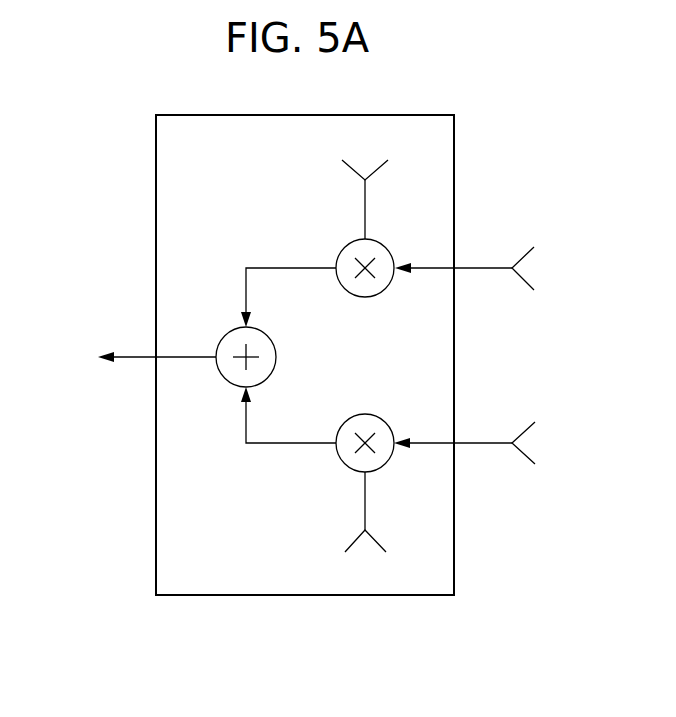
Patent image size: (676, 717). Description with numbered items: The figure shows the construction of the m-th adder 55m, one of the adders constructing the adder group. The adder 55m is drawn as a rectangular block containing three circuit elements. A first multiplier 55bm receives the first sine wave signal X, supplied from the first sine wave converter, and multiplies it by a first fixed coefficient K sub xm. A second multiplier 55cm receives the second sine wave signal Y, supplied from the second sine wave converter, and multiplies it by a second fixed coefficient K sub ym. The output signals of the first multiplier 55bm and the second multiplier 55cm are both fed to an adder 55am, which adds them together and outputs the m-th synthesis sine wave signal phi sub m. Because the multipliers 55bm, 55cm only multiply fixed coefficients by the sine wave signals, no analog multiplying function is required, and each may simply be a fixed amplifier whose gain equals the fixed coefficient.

The m-th adder 55m is at (156, 190).
The adder 55am is at (225, 336).
The first multiplier 55bm is at (344, 248).
The second multiplier 55cm is at (345, 463).